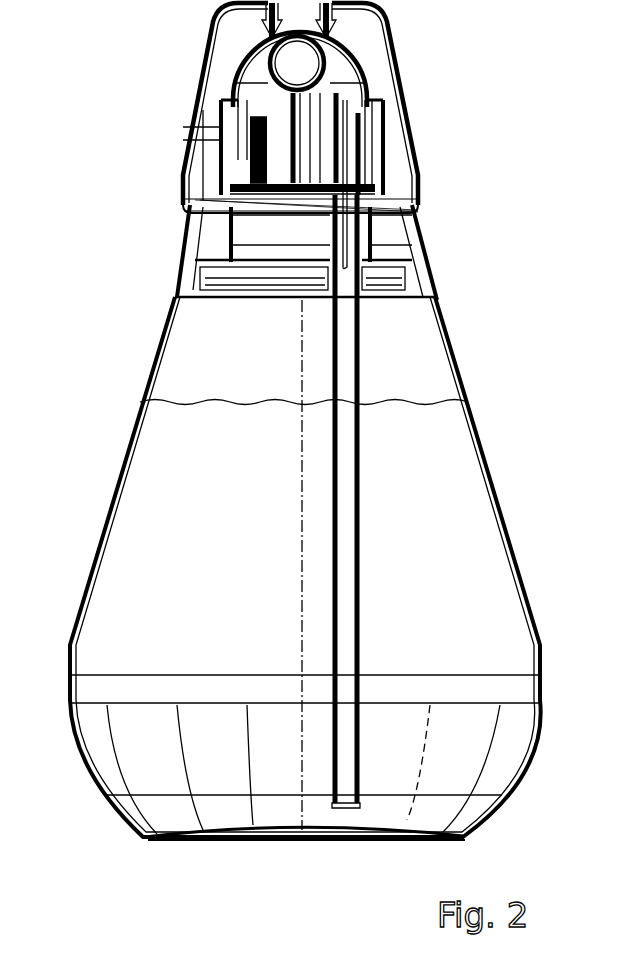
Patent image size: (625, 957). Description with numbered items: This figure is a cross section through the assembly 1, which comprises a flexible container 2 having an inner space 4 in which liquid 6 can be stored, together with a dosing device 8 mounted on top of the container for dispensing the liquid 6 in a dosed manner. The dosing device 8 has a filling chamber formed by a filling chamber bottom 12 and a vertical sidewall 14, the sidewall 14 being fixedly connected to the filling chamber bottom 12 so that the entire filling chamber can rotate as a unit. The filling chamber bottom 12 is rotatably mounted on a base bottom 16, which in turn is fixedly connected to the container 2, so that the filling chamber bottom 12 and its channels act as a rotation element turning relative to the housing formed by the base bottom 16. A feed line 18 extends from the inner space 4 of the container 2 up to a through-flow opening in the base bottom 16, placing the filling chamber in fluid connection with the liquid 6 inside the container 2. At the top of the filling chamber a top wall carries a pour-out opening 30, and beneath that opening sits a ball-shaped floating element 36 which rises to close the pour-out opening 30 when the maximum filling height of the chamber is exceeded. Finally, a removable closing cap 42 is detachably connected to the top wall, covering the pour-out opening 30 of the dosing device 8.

The assembly 1 is at (568, 806).
The flexible container 2 is at (468, 376).
The inner space 4 is at (216, 519).
The liquid 6 is at (237, 390).
The dosing device 8 is at (428, 152).
The filling chamber bottom 12 is at (220, 222).
The vertical sidewall 14 is at (230, 73).
The base bottom 16 is at (302, 214).
The feed line 18 is at (358, 555).
The pour-out opening 30 is at (350, 810).
The floating element 36 is at (330, 72).
The removable closing cap 42 is at (383, 43).